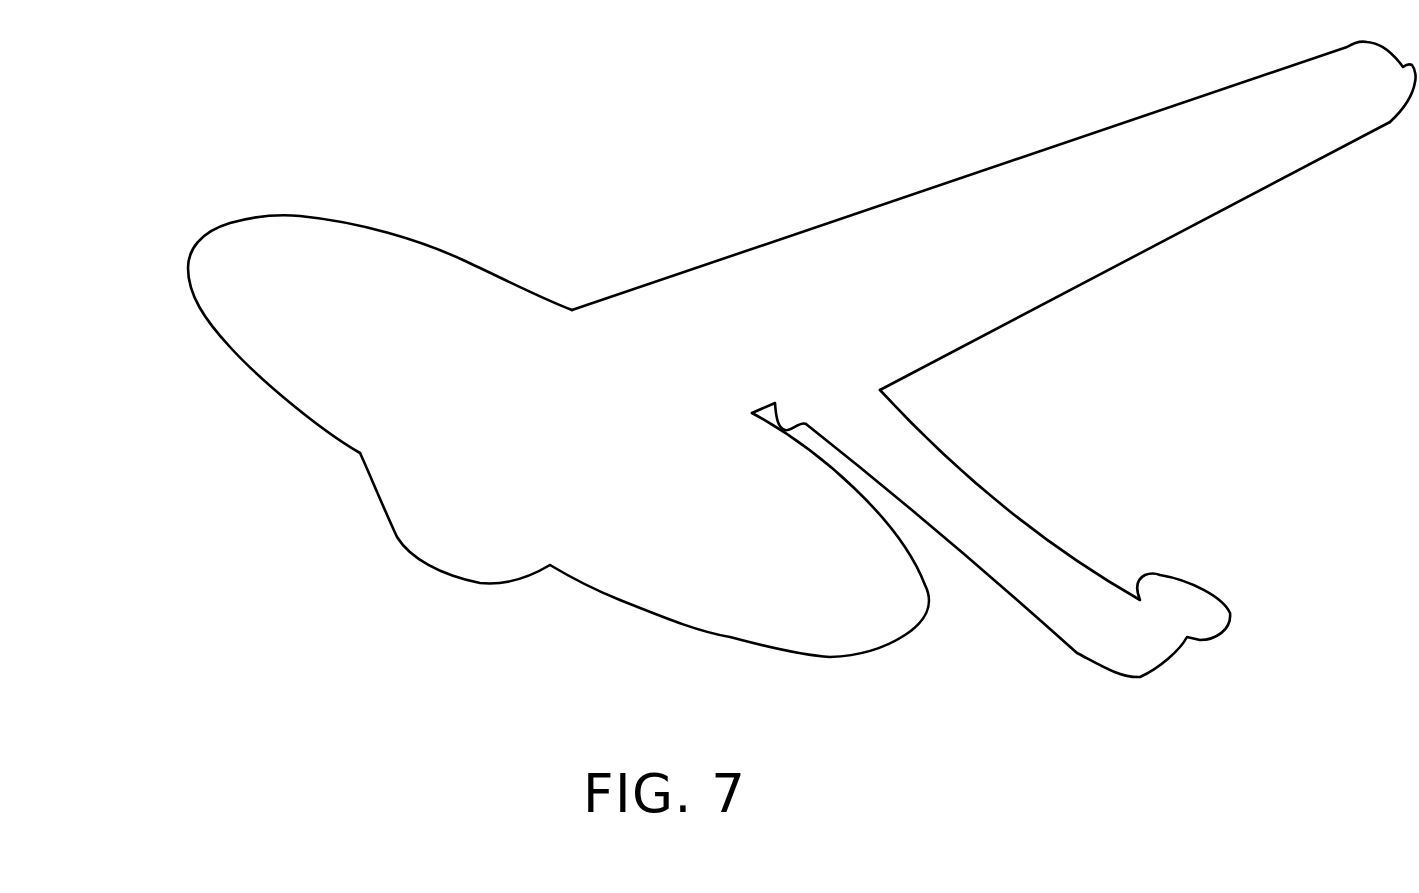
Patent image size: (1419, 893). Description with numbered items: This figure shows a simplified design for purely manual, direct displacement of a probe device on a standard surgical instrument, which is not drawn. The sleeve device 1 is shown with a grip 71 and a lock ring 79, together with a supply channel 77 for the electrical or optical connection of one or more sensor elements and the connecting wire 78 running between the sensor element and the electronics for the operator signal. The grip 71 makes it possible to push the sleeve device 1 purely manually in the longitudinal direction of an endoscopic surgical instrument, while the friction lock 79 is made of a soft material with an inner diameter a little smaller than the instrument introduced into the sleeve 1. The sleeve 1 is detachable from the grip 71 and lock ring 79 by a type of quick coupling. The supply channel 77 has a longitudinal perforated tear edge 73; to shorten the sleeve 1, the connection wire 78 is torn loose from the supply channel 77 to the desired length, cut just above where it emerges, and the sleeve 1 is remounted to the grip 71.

The sleeve device 1 is at (761, 390).
The grip 71 is at (518, 436).
The longitudinal perforated tear edge 73 is at (994, 216).
The supply channel 77 is at (1072, 292).
The connecting wire 78 is at (1077, 653).
The lock ring 79 is at (398, 537).